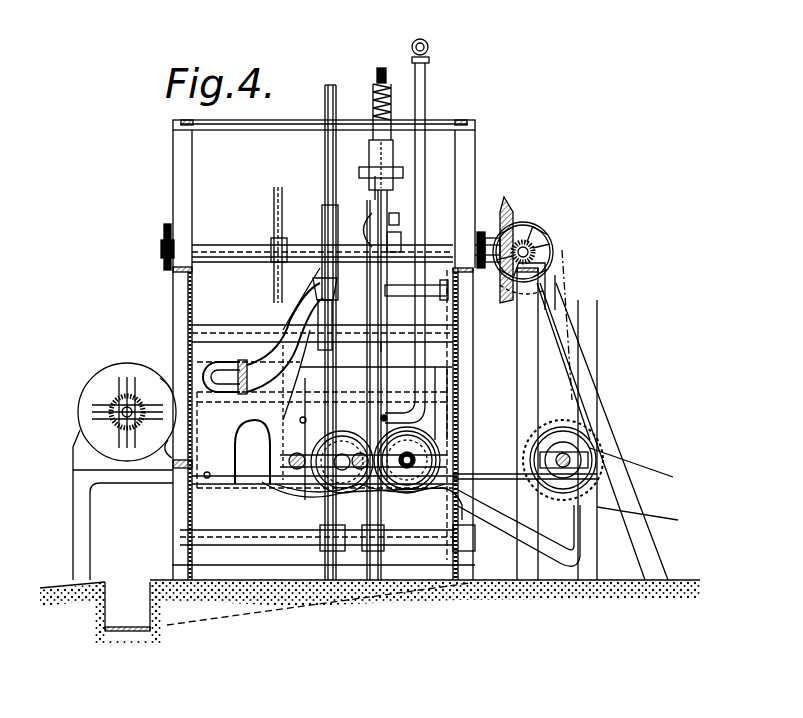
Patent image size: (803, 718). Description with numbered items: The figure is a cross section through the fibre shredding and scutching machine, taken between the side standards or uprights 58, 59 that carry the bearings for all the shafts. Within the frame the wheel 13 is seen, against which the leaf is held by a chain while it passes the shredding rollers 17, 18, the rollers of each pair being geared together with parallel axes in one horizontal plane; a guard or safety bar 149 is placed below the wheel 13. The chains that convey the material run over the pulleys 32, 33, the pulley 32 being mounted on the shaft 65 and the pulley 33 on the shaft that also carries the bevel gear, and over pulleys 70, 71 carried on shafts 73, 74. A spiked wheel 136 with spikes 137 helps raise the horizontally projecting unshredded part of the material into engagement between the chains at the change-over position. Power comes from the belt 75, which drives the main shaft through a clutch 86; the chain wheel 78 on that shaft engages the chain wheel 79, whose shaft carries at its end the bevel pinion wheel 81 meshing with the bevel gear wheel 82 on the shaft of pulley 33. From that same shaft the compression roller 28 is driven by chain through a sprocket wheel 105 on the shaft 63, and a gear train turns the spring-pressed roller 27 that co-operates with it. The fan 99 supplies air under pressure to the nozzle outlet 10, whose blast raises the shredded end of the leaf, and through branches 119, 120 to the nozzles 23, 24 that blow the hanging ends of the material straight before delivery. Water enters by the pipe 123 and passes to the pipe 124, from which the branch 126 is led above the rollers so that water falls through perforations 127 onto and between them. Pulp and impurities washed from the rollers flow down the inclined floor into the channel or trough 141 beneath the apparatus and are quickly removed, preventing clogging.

The outlet for an air blast 10 is at (292, 308).
The wheel 13 is at (376, 346).
The shredding roller 17 is at (290, 465).
The shredding roller 18 is at (455, 483).
The nozzle 23 is at (365, 215).
The nozzle 24 is at (400, 221).
The spring-pressed roller 27 is at (437, 383).
The co-operating roller 28 is at (412, 446).
The pulley 32 is at (325, 565).
The pulley 33 is at (323, 215).
The side standard or upright 58 is at (462, 315).
The side standard or upright 59 is at (172, 313).
The shaft 63 is at (208, 247).
The shaft 65 is at (229, 533).
The pulley 70 is at (387, 208).
The pulley 71 is at (380, 320).
The shaft 73 is at (375, 178).
The shaft 74 is at (388, 292).
The belt 75 is at (585, 402).
The chain wheel 78 is at (605, 456).
The chain wheel 79 is at (553, 265).
The bevel pinion wheel 81 is at (535, 249).
The bevel gear wheel 82 is at (511, 215).
The clutch 86 is at (596, 431).
The fan 99 is at (122, 376).
The sprocket wheel 105 is at (163, 259).
The branch 119 is at (337, 280).
The branch 120 is at (402, 243).
The pipe 123 is at (429, 48).
The pipe 124 is at (426, 105).
The branch pipe 126 is at (392, 414).
The perforations 127 is at (450, 408).
The wheel 136 is at (272, 248).
The spikes 137 is at (278, 188).
The channel or trough 141 is at (236, 600).
The guard or safety bar 149 is at (377, 352).